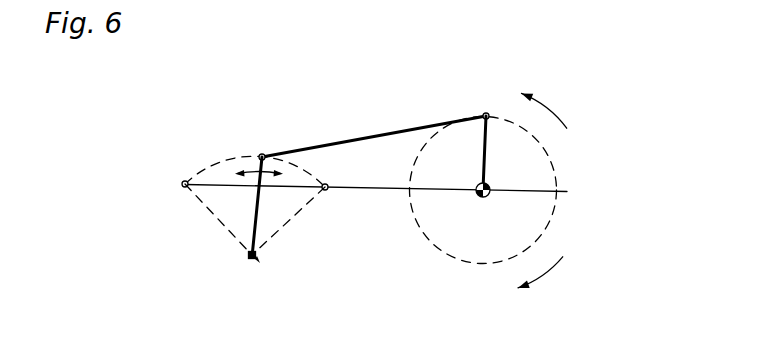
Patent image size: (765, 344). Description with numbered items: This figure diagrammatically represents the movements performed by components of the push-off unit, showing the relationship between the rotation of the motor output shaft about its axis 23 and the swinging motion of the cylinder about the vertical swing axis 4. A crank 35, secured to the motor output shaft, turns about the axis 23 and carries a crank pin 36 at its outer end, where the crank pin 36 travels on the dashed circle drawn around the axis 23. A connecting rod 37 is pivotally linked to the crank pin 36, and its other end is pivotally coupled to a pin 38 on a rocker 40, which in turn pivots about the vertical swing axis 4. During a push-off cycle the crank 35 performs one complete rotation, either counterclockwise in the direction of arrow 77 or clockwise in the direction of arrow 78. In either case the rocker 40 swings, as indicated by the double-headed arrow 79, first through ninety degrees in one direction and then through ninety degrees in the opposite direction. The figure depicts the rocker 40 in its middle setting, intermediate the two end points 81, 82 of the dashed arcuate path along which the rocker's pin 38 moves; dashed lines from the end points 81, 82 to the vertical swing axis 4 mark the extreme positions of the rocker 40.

The vertical swing axis 4 is at (252, 264).
The axis 23 is at (488, 195).
The crank 35 is at (485, 167).
The crank pin 36 is at (485, 112).
The connecting rod 37 is at (368, 135).
The pin 38 is at (263, 153).
The rocker 40 is at (257, 222).
The arrow 77 is at (550, 103).
The arrow 78 is at (543, 277).
The double-headed arrow 79 is at (248, 163).
The end point 81 is at (180, 178).
The end point 82 is at (327, 193).